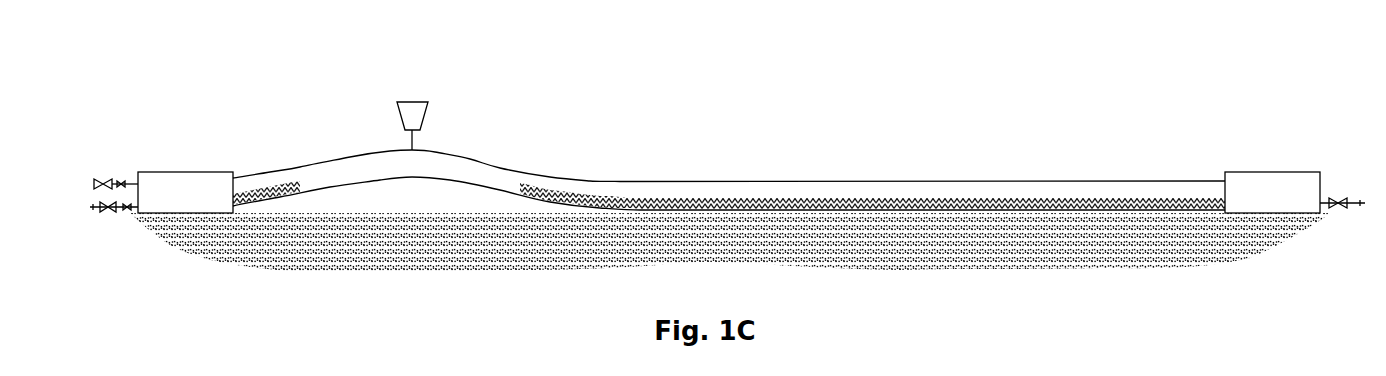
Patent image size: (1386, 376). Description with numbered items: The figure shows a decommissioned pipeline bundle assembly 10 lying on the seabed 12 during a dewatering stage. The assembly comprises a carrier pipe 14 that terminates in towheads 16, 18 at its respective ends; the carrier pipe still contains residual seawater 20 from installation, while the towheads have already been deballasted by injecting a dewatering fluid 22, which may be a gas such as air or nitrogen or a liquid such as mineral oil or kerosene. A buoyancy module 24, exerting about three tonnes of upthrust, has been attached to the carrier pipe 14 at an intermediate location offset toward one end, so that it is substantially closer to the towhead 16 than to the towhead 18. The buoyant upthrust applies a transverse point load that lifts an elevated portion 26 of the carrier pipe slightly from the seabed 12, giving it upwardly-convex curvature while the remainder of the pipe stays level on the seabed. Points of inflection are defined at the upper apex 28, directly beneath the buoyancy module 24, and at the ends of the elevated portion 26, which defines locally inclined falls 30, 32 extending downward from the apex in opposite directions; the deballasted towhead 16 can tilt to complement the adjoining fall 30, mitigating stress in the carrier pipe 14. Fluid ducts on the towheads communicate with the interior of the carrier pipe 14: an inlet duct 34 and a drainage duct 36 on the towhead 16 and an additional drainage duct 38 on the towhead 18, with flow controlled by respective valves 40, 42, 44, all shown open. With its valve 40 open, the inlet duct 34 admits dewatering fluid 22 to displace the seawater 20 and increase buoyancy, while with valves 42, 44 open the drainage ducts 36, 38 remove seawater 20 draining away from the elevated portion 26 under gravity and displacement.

The pipeline bundle assembly 10 is at (1080, 110).
The seabed 12 is at (1200, 244).
The carrier pipe 14 is at (897, 181).
The towhead 16 is at (185, 172).
The towhead 18 is at (1280, 172).
The seawater 20 is at (262, 200).
The dewatering fluid 22 is at (802, 200).
The buoyancy module 24 is at (413, 110).
The elevated portion 26 is at (357, 103).
The upper apex 28 is at (420, 150).
The fall 30 is at (310, 165).
The fall 32 is at (522, 170).
The inlet duct 34 is at (96, 180).
The drainage duct 36 is at (128, 216).
The drainage duct 38 is at (1325, 213).
The valve 40 is at (120, 179).
The valve 42 is at (106, 212).
The valve 44 is at (1343, 198).